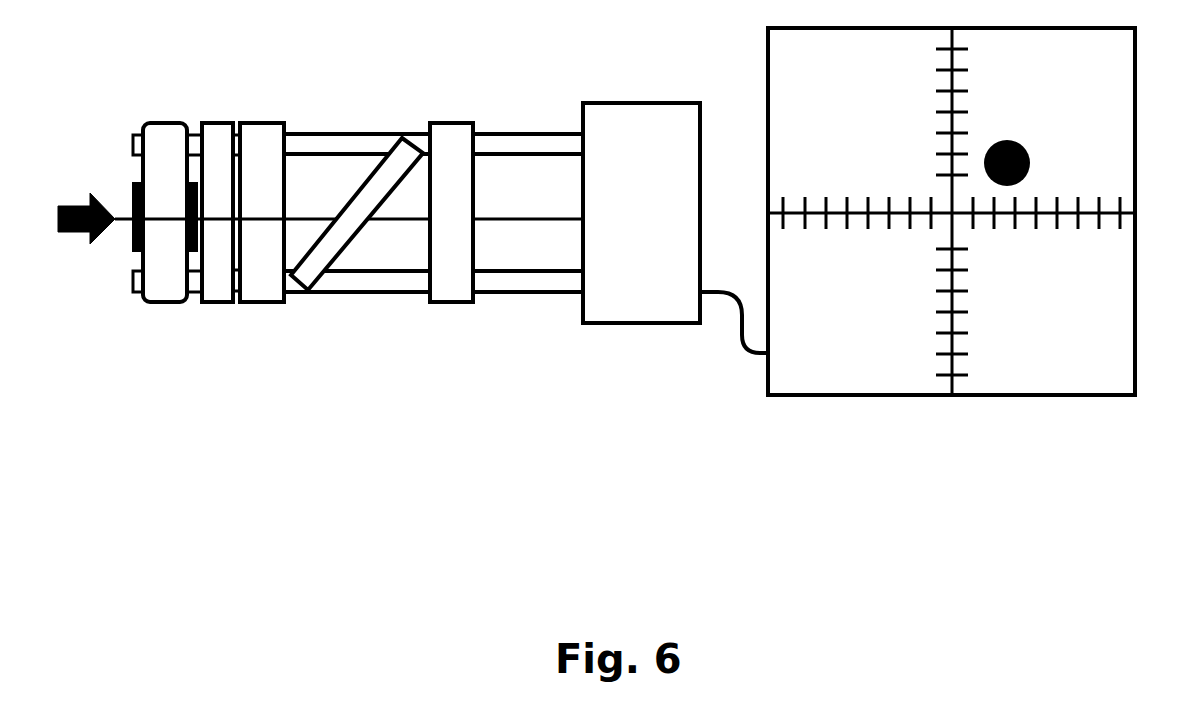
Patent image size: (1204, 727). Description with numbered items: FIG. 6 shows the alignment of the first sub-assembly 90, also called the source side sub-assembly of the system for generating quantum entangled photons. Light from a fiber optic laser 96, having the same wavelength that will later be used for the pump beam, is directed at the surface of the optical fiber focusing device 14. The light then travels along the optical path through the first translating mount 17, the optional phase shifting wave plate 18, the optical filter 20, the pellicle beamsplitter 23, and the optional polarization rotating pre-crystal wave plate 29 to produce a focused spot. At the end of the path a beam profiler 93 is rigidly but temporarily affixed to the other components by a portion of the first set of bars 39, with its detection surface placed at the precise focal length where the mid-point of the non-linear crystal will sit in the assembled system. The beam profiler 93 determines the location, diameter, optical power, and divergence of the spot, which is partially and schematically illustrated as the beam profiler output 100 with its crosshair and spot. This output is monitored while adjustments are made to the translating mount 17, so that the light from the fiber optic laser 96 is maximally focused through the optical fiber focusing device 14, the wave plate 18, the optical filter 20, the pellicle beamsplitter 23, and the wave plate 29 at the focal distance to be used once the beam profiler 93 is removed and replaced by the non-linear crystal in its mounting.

The fiber optic laser 96 is at (71, 246).
The optical fiber focusing device 14 is at (135, 253).
The first translating mount 17 is at (166, 312).
The phase shifting wave plate 18 is at (219, 312).
The optical filter 20 is at (262, 312).
The pellicle beamsplitter 23 is at (312, 270).
The polarization rotating pre-crystal wave plate 29 is at (458, 312).
The first set of bars 39 is at (521, 295).
The beam profiler 93 is at (647, 333).
The beam profiler output 100 is at (952, 408).
The first sub-assembly 90 is at (1036, 563).